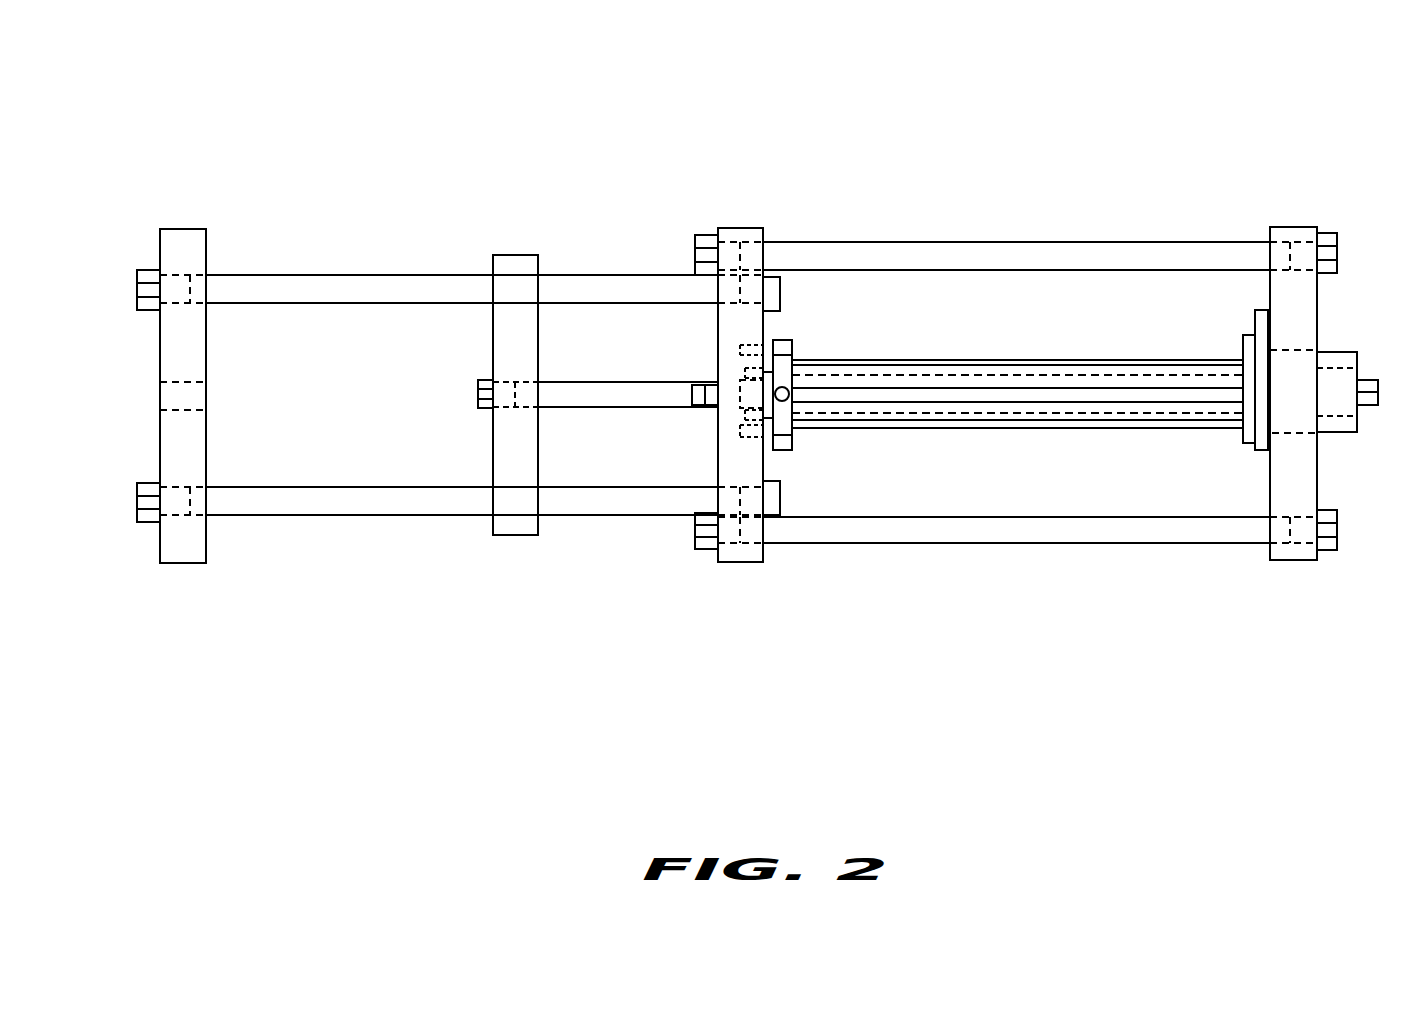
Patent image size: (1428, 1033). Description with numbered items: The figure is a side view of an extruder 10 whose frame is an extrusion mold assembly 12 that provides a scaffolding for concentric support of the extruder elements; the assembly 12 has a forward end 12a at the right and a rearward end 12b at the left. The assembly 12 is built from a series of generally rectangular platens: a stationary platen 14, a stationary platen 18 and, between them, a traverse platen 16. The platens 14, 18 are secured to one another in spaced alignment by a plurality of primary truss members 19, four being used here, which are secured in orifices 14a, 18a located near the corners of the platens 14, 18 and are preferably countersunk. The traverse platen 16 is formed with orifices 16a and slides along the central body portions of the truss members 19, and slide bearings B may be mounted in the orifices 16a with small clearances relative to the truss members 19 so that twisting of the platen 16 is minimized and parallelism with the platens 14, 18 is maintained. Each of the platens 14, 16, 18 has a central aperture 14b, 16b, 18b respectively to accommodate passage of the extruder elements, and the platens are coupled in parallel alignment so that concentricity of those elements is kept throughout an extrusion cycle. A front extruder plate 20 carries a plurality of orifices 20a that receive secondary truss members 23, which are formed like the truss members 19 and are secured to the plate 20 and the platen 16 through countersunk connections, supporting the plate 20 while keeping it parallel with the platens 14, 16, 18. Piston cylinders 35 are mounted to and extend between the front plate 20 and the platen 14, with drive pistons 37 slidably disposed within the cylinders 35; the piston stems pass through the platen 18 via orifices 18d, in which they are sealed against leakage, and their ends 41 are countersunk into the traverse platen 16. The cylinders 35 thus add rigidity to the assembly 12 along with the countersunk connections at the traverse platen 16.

The extruder 10 is at (922, 102).
The extrusion mold assembly 12 is at (740, 224).
The forward end 12a is at (1320, 465).
The rearward end 12b is at (160, 455).
The stationary platen 14 is at (178, 228).
The orifices 14a is at (185, 292).
The central aperture 14b is at (190, 396).
The traverse platen 16 is at (515, 255).
The orifices 16a is at (528, 292).
The central aperture 16b is at (528, 405).
The stationary platen 18 is at (740, 565).
The orifices 18a is at (760, 242).
The central aperture 18b is at (736, 375).
The orifices 18d is at (740, 415).
The primary truss members 19 is at (345, 273).
The front extruder plate 20 is at (1300, 227).
The orifices 20a is at (1290, 248).
The secondary truss members 23 is at (985, 245).
The piston cylinders 35 is at (935, 357).
The drive pistons 37 is at (632, 408).
The ends 41 is at (520, 386).
The slide bearings B is at (493, 302).